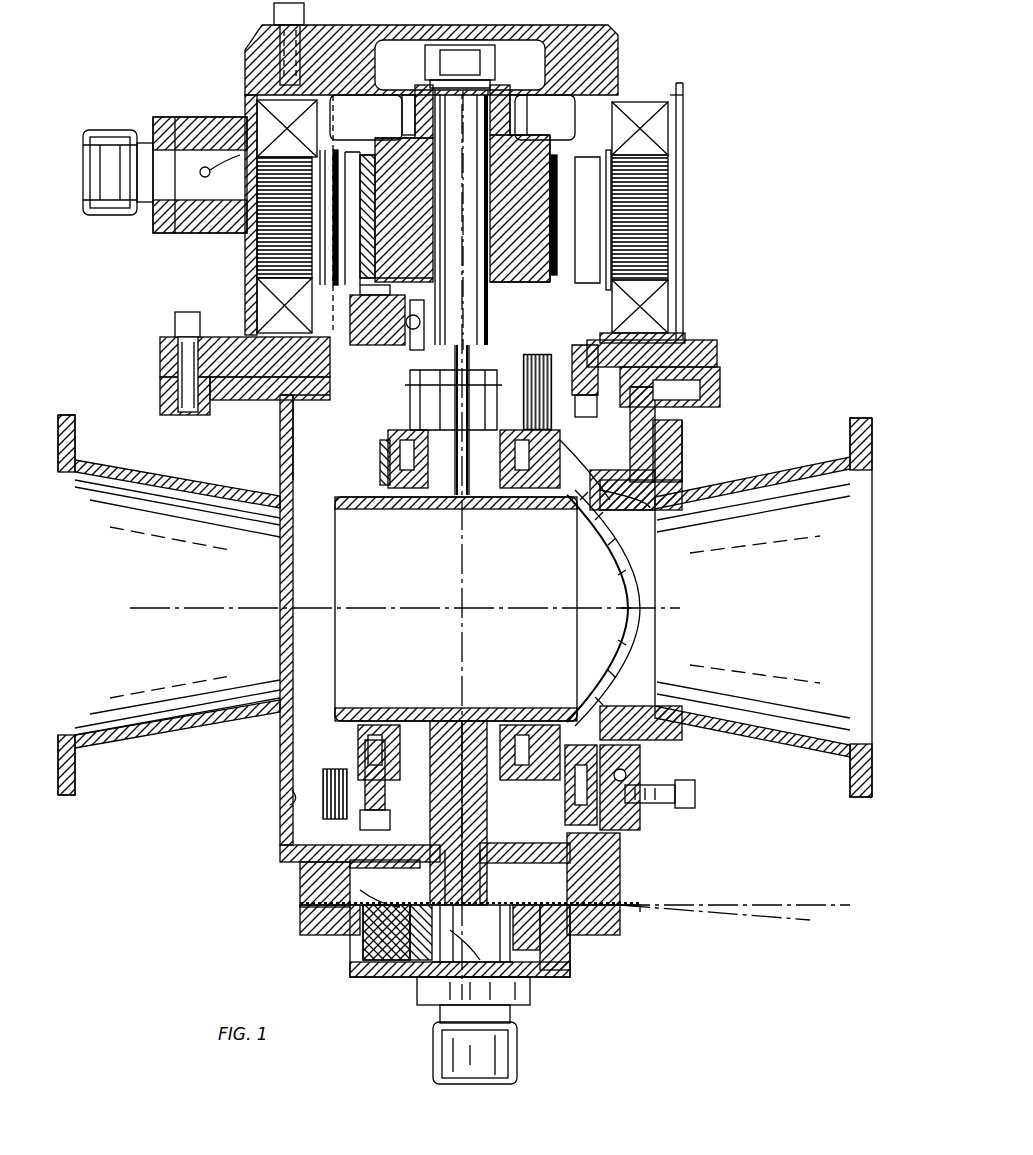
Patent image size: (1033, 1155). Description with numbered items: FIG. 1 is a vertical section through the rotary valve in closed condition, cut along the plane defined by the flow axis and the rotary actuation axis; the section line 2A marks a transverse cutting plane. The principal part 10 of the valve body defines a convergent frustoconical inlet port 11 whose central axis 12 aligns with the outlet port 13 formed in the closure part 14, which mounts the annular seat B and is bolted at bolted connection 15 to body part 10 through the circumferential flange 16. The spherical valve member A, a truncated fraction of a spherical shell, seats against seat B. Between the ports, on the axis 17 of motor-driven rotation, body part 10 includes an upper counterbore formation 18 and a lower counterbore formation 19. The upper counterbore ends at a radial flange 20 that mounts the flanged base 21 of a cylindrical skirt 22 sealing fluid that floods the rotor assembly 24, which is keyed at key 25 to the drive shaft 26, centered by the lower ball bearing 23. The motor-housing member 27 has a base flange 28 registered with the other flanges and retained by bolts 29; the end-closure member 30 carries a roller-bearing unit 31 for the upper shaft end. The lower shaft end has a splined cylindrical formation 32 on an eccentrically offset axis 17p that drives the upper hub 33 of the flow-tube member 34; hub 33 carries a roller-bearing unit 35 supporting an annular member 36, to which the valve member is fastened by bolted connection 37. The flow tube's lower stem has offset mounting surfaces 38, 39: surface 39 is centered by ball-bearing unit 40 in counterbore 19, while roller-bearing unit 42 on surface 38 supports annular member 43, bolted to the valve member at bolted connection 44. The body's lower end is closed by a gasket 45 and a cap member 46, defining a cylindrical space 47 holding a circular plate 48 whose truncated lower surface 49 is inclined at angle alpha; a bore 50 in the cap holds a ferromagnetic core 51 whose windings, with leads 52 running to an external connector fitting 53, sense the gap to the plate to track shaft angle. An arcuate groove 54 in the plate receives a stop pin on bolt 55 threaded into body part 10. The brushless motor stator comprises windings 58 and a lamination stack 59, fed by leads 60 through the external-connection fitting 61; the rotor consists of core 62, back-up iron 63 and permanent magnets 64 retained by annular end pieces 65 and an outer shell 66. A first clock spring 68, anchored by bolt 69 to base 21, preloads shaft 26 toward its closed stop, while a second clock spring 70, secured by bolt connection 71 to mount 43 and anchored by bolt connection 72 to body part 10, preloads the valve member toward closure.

The principal part of the valve body 10 is at (272, 766).
The inlet port 11 is at (150, 612).
The central axis 12 is at (205, 606).
The outlet port 13 is at (814, 608).
The closure part of the valve body 14 is at (680, 728).
The bolted connection 15 is at (695, 794).
The circumferential flange 16 is at (670, 480).
The axis of motor-driven rotary actuating displacement 17 is at (462, 170).
The eccentrically offset axis 17p is at (464, 540).
The upper counterbore formation 18 is at (292, 441).
The lower counterbore formation 19 is at (290, 797).
The radial flange 20 is at (250, 398).
The flanged base 21 is at (345, 345).
The cylindrical skirt 22 is at (334, 105).
The lower ball bearing 23 is at (413, 330).
The rotor assembly 24 is at (378, 150).
The key 25 is at (478, 178).
The drive shaft 26 is at (474, 241).
The motor-housing member 27 is at (680, 215).
The base flange 28 is at (222, 340).
The bolts 29 is at (175, 326).
The end-closure member 30 is at (362, 40).
The roller-bearing unit 31 is at (408, 98).
The splined cylindrical formation 32 is at (468, 378).
The upper hub 33 is at (528, 410).
The flow-tube member 34 is at (336, 520).
The roller-bearing unit 35 is at (388, 445).
The annular member 36 is at (380, 462).
The bolted connection 37 is at (558, 462).
The upper mounting surface 38 is at (430, 735).
The lower mounting surface 39 is at (300, 850).
The ball-bearing unit 40 is at (300, 870).
The roller-bearing unit 42 is at (525, 725).
The annular member 43 is at (358, 730).
The bolted connection 44 is at (560, 758).
The seal or gasket 45 is at (620, 908).
The bottom-closure cap member 46 is at (572, 955).
The cylindrical space 47 is at (300, 925).
The circular plate 48 is at (533, 927).
The angularly truncated lower surface 49 is at (300, 900).
The cylindrical bore 50 is at (350, 940).
The ferromagnetic core 51 is at (380, 977).
The electrical-winding leads 52 is at (420, 996).
The connector 53 is at (517, 1050).
The arcuate groove 54 is at (620, 879).
The bolt 55 is at (620, 855).
The stator windings 58 is at (640, 110).
The stack of laminations 59 is at (672, 232).
The electrical leads 60 is at (230, 180).
The multiple-pin external-connection fitting 61 is at (122, 128).
The core 62 is at (257, 252).
The back-up iron 63 is at (340, 250).
The permanent magnets 64 is at (325, 270).
The annular end pieces 65 is at (555, 155).
The outer cylindrical shell 66 is at (255, 120).
The first clock spring 68 is at (572, 380).
The bolt 69 is at (672, 330).
The second clock spring 70 is at (345, 780).
The bolt connection 71 is at (358, 822).
The bolt connection 72 is at (620, 782).
The spherical valve member A is at (627, 662).
The annular seat B is at (612, 528).
The section line 2A is at (244, 632).
The angle alpha is at (790, 880).